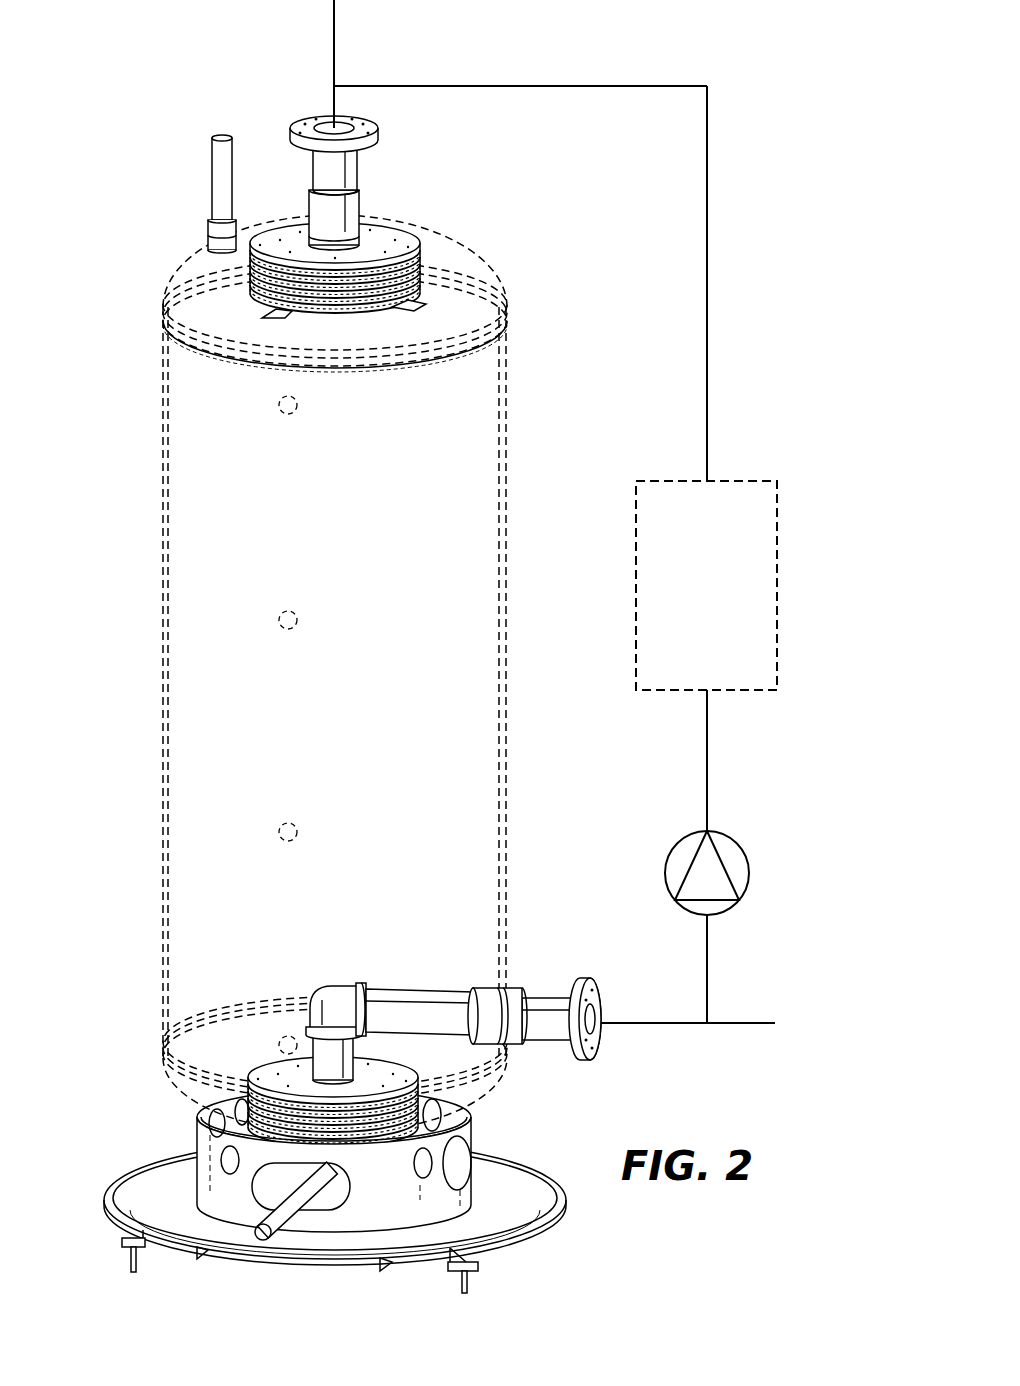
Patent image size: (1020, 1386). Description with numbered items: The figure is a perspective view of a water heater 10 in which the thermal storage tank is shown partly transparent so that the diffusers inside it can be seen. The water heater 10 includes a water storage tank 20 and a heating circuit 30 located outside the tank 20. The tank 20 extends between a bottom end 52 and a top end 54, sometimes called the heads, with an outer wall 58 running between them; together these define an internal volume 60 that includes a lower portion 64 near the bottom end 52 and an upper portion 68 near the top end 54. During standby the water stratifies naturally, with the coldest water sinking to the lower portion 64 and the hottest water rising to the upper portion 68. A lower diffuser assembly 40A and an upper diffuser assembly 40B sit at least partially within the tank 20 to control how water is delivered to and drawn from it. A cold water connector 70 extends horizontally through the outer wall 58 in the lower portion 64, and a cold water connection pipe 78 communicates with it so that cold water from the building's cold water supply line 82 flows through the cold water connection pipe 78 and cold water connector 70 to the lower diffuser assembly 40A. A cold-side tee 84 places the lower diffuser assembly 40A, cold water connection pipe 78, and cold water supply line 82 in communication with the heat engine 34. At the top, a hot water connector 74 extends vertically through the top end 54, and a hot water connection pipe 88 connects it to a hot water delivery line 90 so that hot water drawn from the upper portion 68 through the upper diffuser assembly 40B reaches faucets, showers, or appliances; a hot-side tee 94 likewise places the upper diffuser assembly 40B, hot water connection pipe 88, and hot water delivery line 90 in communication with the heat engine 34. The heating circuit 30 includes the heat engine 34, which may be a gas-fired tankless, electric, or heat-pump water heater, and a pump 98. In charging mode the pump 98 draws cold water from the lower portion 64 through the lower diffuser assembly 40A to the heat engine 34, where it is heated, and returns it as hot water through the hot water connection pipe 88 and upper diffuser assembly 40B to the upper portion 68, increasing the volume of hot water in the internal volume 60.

The water heater 10 is at (150, 104).
The water storage tank 20 is at (153, 248).
The heating circuit 30 is at (748, 238).
The heat engine 34 is at (777, 481).
The lower diffuser assembly 40A is at (253, 1060).
The upper diffuser assembly 40B is at (257, 317).
The bottom end 52 is at (167, 1112).
The top end 54 is at (163, 278).
The outer wall 58 is at (162, 668).
The internal volume 60 is at (210, 583).
The lower portion 64 is at (213, 913).
The upper portion 68 is at (247, 470).
The cold water connector 70 is at (508, 1037).
The hot water connector 74 is at (348, 208).
The cold water connection pipe 78 is at (550, 1010).
The cold water supply line 82 is at (655, 1025).
The cold-side tee 84 is at (708, 1025).
The hot water connection pipe 88 is at (345, 173).
The hot water delivery line 90 is at (325, 103).
The hot-side tee 94 is at (330, 100).
The pump 98 is at (735, 842).